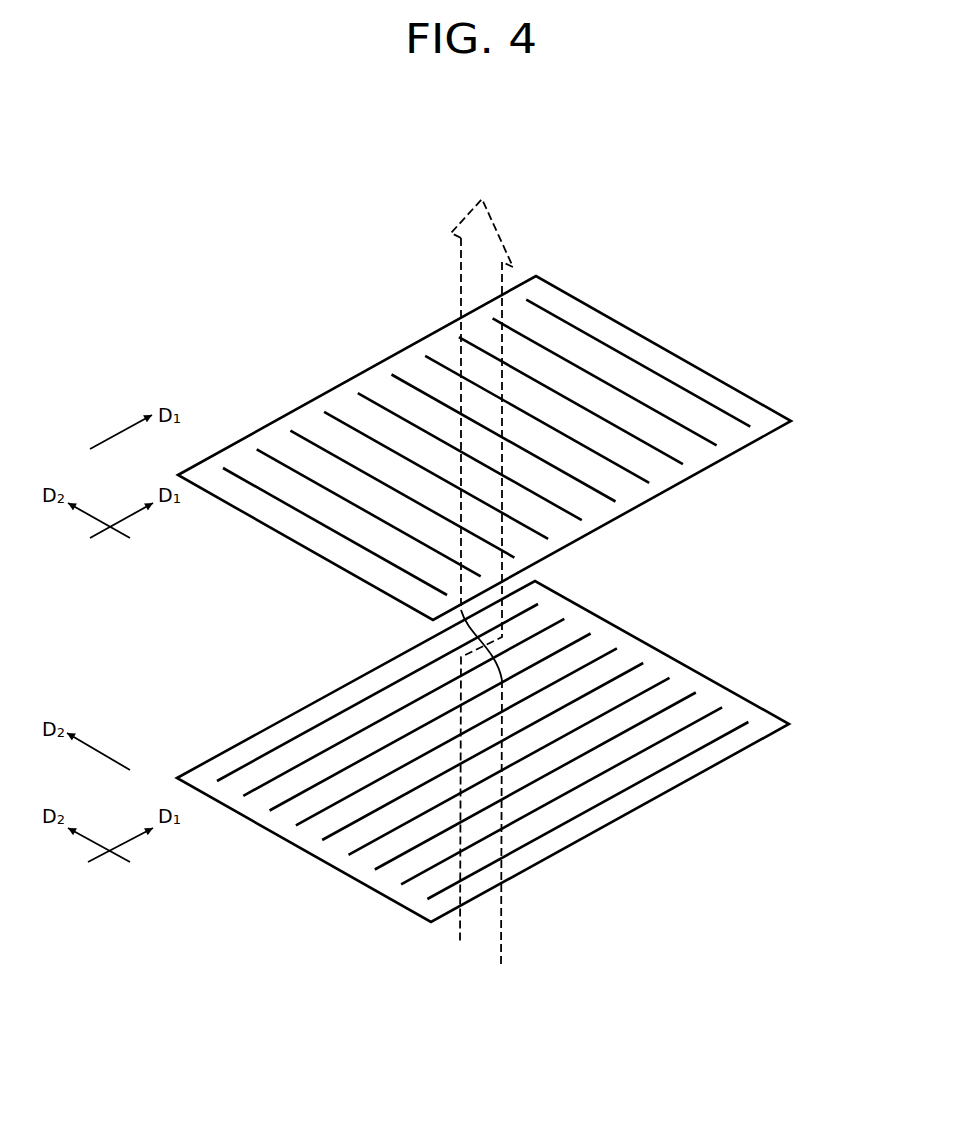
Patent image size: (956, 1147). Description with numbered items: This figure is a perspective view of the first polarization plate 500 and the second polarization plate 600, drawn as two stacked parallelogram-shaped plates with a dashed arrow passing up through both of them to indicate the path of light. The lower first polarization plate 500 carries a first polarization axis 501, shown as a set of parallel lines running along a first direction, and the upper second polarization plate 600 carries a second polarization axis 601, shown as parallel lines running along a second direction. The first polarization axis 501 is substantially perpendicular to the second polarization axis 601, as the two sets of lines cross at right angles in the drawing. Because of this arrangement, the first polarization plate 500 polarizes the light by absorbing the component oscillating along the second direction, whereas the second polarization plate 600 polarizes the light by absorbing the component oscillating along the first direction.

The first polarization plate 500 is at (658, 797).
The first polarization axis 501 is at (688, 725).
The second polarization plate 600 is at (655, 498).
The second polarization axis 601 is at (688, 425).